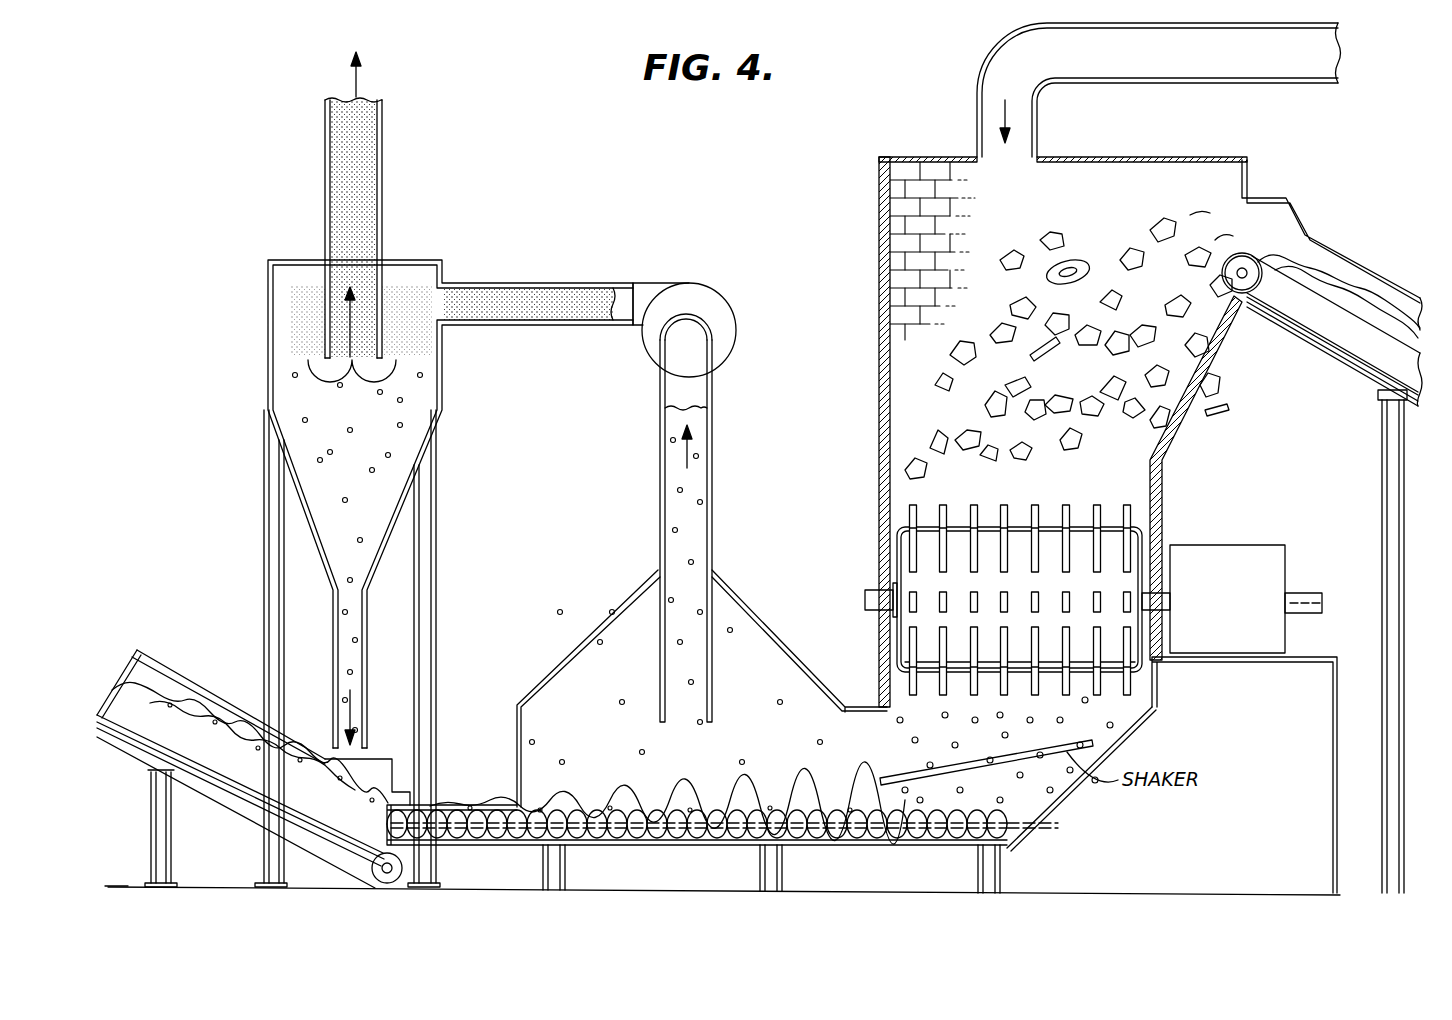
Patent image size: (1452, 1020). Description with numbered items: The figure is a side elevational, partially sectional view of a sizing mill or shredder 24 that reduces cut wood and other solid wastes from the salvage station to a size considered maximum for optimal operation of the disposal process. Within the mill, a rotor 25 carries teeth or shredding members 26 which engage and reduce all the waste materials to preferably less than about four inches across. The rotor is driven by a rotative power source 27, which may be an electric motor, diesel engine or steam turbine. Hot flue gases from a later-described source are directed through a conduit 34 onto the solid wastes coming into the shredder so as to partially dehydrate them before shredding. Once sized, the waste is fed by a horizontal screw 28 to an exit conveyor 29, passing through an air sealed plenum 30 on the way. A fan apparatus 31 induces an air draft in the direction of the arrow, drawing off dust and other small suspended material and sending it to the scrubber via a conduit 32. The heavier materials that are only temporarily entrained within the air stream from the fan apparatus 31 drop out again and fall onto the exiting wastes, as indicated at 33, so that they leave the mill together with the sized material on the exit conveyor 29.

The sizing mill or shredder 24 is at (1306, 225).
The rotor 25 is at (927, 580).
The teeth or shredding members 26 is at (910, 515).
The rotative power source 27 is at (1218, 553).
The horizontal screw 28 is at (895, 834).
The exit conveyor 29 is at (163, 668).
The air sealed plenum 30 is at (197, 683).
The fan apparatus 31 is at (662, 290).
The conduit 32 is at (385, 170).
The heavier materials falling onto exiting wastes 33 is at (375, 513).
The conduit 34 is at (1255, 85).